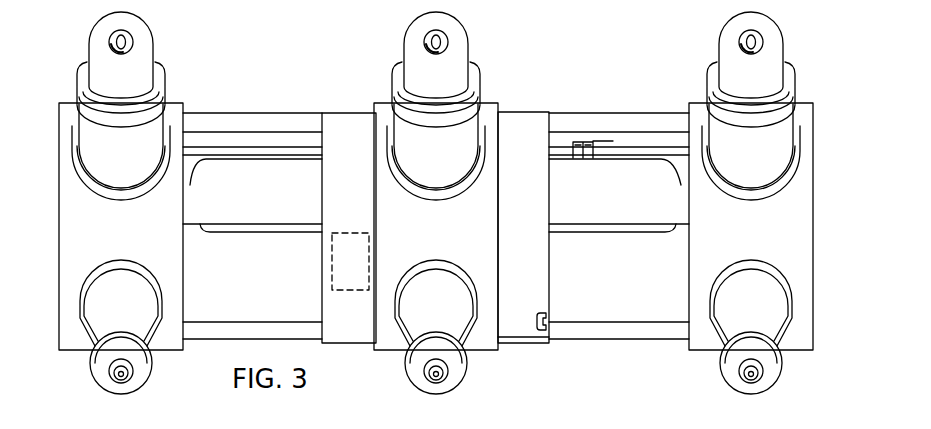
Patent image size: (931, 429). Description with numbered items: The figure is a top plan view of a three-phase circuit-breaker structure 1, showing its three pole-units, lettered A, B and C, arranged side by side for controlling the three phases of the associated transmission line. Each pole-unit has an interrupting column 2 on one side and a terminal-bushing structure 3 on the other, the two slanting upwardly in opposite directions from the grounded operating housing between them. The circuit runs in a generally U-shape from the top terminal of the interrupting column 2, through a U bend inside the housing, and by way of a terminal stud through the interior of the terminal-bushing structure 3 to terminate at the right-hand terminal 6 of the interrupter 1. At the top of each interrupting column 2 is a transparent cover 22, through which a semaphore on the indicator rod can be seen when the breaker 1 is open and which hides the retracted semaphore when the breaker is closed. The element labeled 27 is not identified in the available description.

The circuit-breaker structure 1 is at (597, 347).
The interrupting column 2 is at (129, 157).
The terminal-bushing structure 3 is at (129, 306).
The right-hand terminal 6 is at (125, 376).
The transparent cover 22 is at (128, 41).
The cap 27 is at (133, 62).